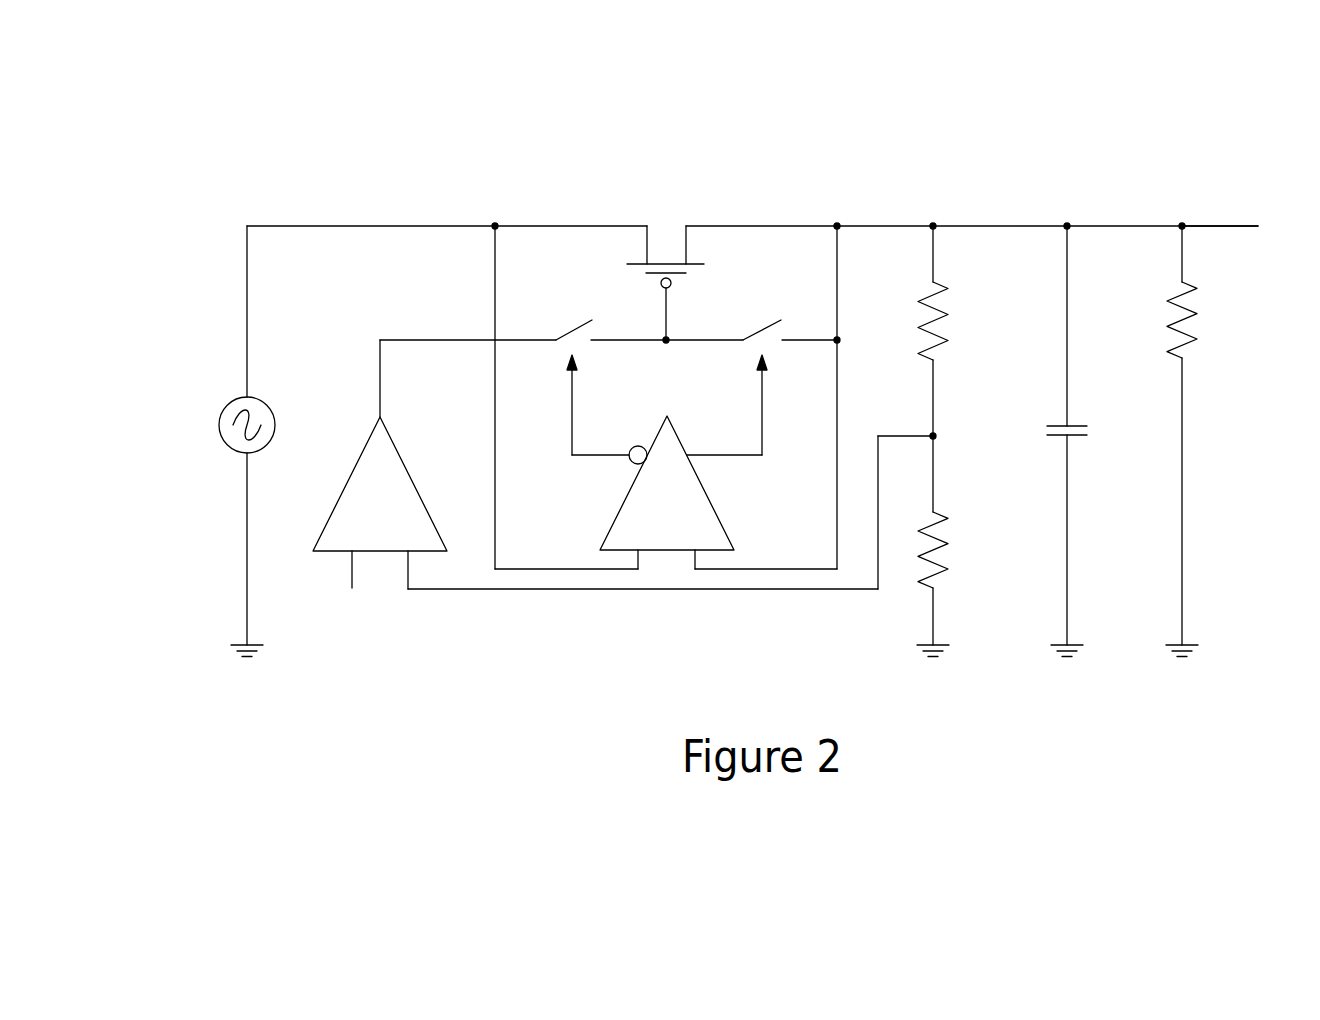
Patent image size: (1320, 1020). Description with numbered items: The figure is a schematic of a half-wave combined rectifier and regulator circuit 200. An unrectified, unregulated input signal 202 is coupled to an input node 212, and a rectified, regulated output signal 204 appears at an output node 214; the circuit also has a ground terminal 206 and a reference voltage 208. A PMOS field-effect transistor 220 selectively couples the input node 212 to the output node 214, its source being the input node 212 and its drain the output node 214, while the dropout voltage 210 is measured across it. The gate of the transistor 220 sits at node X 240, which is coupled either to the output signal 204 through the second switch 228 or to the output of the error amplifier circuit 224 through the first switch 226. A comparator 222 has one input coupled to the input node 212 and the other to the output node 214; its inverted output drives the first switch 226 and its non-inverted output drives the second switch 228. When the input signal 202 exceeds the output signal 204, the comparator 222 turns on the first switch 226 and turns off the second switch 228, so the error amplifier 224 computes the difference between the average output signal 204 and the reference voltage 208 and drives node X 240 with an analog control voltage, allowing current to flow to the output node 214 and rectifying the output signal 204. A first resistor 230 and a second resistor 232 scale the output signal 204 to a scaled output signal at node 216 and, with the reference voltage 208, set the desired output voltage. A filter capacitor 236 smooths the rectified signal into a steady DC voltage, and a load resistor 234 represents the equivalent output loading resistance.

The half-wave combined rectifier and regulator circuit 200 is at (705, 381).
The input signal Vac 202 is at (157, 457).
The output signal Vo 204 is at (1267, 217).
The ground terminal 206 is at (262, 650).
The reference voltage Vref 208 is at (393, 627).
The dropout voltage Vs 210 is at (688, 153).
The input node 212 is at (495, 226).
The output node 214 is at (933, 226).
The node 216 is at (938, 433).
The FET Ms 220 is at (717, 205).
The comparator CO1 222 is at (723, 482).
The error amplifier circuit Ae 224 is at (428, 480).
The switch S1 226 is at (596, 277).
The switch S2 228 is at (785, 282).
The resistor R1 230 is at (1000, 288).
The resistor R2 232 is at (1000, 518).
The resistor RL 234 is at (1118, 298).
The filter capacitor Cb 236 is at (1140, 403).
The node X 240 is at (658, 348).